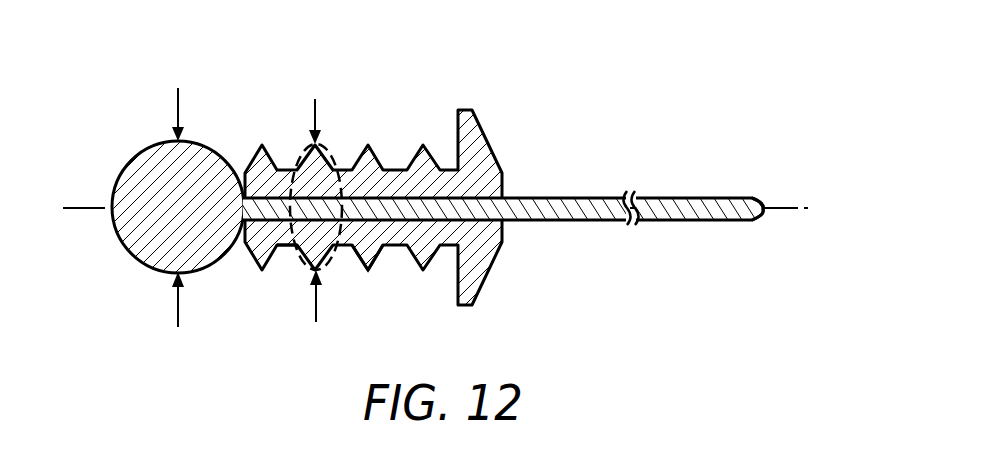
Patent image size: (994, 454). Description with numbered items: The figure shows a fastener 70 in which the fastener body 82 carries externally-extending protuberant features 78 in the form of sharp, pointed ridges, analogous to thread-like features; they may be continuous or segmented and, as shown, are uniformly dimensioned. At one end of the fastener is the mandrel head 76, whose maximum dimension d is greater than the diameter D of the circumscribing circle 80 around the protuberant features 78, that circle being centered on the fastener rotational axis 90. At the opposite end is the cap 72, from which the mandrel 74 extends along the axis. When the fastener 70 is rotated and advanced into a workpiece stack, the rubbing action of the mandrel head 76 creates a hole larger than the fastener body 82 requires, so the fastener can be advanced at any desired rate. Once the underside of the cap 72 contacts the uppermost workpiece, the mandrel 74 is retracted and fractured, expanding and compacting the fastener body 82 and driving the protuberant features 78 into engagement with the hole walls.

The fastener 70 is at (444, 176).
The cap 72 is at (490, 148).
The mandrel 74 is at (570, 197).
The mandrel head 76 is at (123, 170).
The protuberant features 78 is at (367, 264).
The circumscribing circle 80 is at (295, 247).
The fastener body 82 is at (342, 173).
The fastener rotational axis 90 is at (788, 208).